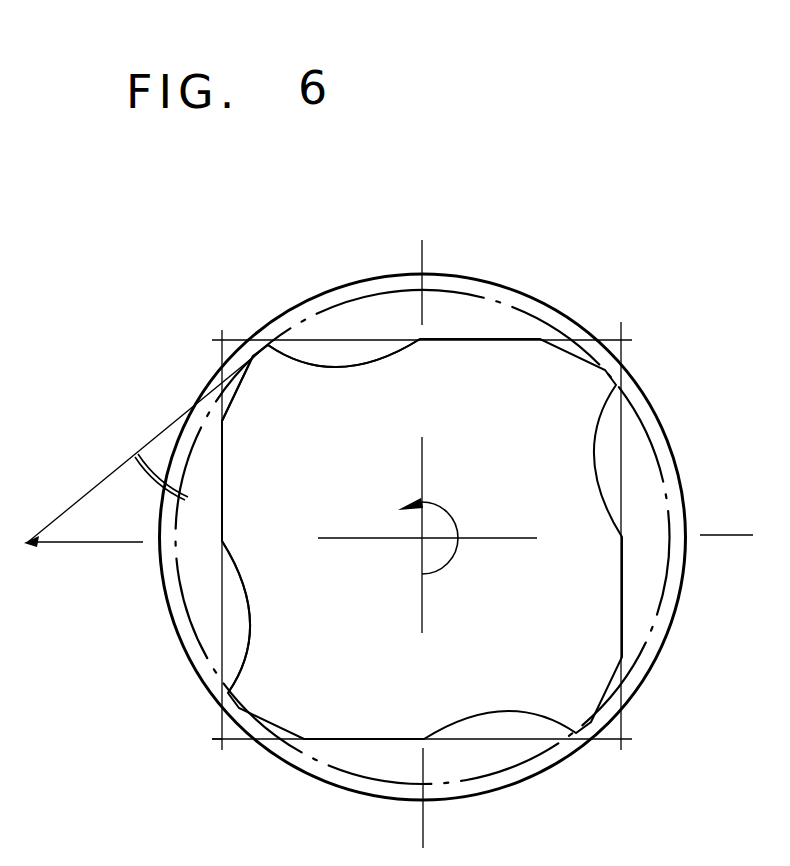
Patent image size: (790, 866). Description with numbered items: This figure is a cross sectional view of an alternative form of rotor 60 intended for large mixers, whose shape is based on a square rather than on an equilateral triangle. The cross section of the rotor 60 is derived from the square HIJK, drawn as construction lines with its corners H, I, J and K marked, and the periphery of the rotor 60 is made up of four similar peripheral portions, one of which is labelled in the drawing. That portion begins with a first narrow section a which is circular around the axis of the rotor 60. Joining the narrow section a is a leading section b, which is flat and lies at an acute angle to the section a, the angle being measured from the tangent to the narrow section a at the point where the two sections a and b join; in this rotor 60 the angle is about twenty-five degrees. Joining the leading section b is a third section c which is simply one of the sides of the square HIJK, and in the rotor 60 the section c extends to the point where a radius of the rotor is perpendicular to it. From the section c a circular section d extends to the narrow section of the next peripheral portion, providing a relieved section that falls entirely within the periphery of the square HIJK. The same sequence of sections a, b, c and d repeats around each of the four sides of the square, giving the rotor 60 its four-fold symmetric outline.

The rotor 60 is at (531, 438).
The first narrow section a is at (262, 346).
The leading section b is at (234, 394).
The third section c is at (224, 487).
The circular section d is at (241, 621).
The corner of square HIJK H is at (414, 532).
The corner of square HIJK I is at (628, 528).
The corner of square HIJK J is at (424, 747).
The corner of square HIJK K is at (210, 753).